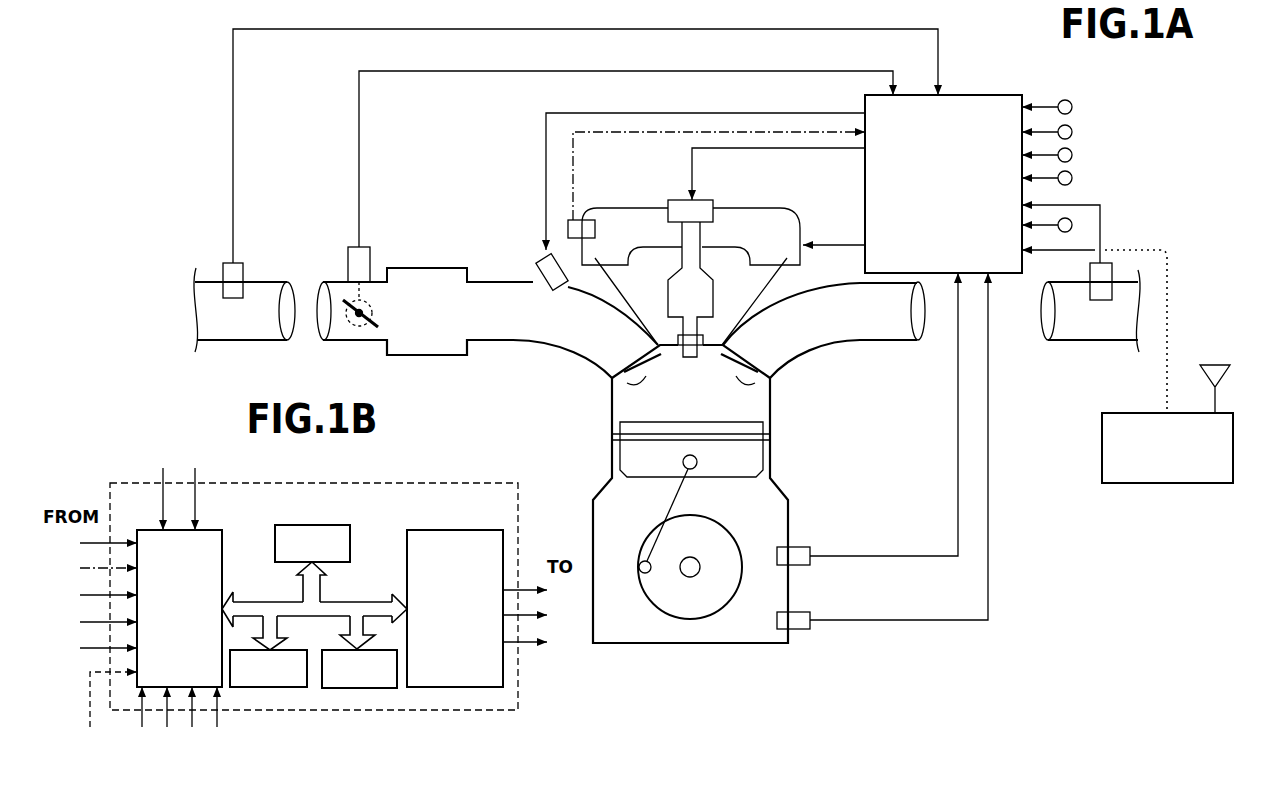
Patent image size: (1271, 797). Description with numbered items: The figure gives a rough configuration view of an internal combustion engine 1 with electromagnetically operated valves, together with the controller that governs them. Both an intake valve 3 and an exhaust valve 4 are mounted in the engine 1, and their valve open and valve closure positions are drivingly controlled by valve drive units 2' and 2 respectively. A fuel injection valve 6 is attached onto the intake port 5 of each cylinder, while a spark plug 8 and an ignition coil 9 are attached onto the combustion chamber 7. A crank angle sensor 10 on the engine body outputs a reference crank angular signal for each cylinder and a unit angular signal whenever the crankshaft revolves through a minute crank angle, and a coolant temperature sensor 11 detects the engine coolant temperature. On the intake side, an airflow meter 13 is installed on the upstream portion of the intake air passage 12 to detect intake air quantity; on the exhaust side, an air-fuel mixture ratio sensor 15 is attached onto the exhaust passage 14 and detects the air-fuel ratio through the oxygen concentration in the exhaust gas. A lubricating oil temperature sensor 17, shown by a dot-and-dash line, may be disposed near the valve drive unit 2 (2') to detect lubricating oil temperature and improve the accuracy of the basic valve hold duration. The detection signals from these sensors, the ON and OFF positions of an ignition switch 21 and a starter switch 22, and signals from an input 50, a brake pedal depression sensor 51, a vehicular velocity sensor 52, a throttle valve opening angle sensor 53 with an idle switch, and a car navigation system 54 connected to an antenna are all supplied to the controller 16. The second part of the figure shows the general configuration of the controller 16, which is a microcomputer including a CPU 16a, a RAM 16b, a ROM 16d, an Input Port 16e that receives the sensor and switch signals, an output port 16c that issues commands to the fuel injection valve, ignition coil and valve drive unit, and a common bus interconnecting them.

In FIG. 1A, the engine 1 is at (780, 497).
In FIG. 1A, the valve drive unit 2 is at (783, 210).
In FIG. 1B, the valve drive unit 2 is at (537, 642).
In FIG. 1A, the valve drive unit 2' is at (684, 252).
In FIG. 1A, the intake valve 3 is at (632, 380).
In FIG. 1A, the exhaust valve 4 is at (750, 392).
In FIG. 1A, the intake port 5 is at (515, 340).
In FIG. 1A, the fuel injection valve 6 is at (541, 257).
In FIG. 1B, the fuel injection valve 6 is at (537, 590).
In FIG. 1A, the combustion chamber 7 is at (662, 400).
In FIG. 1A, the spark plug 8 is at (695, 350).
In FIG. 1A, the ignition coil 9 is at (676, 200).
In FIG. 1B, the ignition coil 9 is at (537, 615).
In FIG. 1A, the crank angle sensor 10 is at (810, 612).
In FIG. 1B, the crank angle sensor 10 is at (163, 488).
In FIG. 1A, the coolant temperature sensor 11 is at (810, 547).
In FIG. 1B, the coolant temperature sensor 11 is at (195, 488).
In FIG. 1A, the intake air passage 12 is at (280, 283).
In FIG. 1A, the airflow meter 13 is at (223, 265).
In FIG. 1B, the airflow meter 13 is at (93, 543).
In FIG. 1A, the exhaust passage 14 is at (1077, 340).
In FIG. 1A, the air-fuel mixture ratio sensor 15 is at (1112, 272).
In FIG. 1B, the air-fuel mixture ratio sensor 15 is at (93, 648).
In FIG. 1A, the controller 16 is at (993, 95).
In FIG. 1B, the controller 16 is at (420, 483).
In FIG. 1B, the CPU 16a is at (318, 525).
In FIG. 1B, the RAM 16b is at (270, 688).
In FIG. 1B, the ROM 16c is at (357, 688).
In FIG. 1B, the ROM 16d is at (440, 530).
In FIG. 1B, the Input Port 16e is at (222, 530).
In FIG. 1A, the lubricating oil temperature sensor 17 is at (580, 220).
In FIG. 1B, the lubricating oil temperature sensor 17 is at (93, 568).
In FIG. 1A, the ignition switch 21 is at (1072, 107).
In FIG. 1B, the ignition switch 21 is at (93, 595).
In FIG. 1A, the starter switch 22 is at (1072, 132).
In FIG. 1B, the starter switch 22 is at (93, 622).
In FIG. 1A, the sensor input 50 is at (1072, 155).
In FIG. 1B, the sensor input 50 is at (142, 720).
In FIG. 1A, the brake pedal depression sensor 51 is at (1072, 178).
In FIG. 1B, the brake pedal depression sensor 51 is at (167, 720).
In FIG. 1A, the vehicular velocity sensor 52 is at (1072, 225).
In FIG. 1B, the vehicular velocity sensor 52 is at (192, 720).
In FIG. 1A, the throttle valve opening angle sensor 53 is at (370, 250).
In FIG. 1B, the throttle valve opening angle sensor 53 is at (217, 720).
In FIG. 1A, the car navigation system 54 is at (1168, 483).
In FIG. 1B, the car navigation system 54 is at (106, 712).